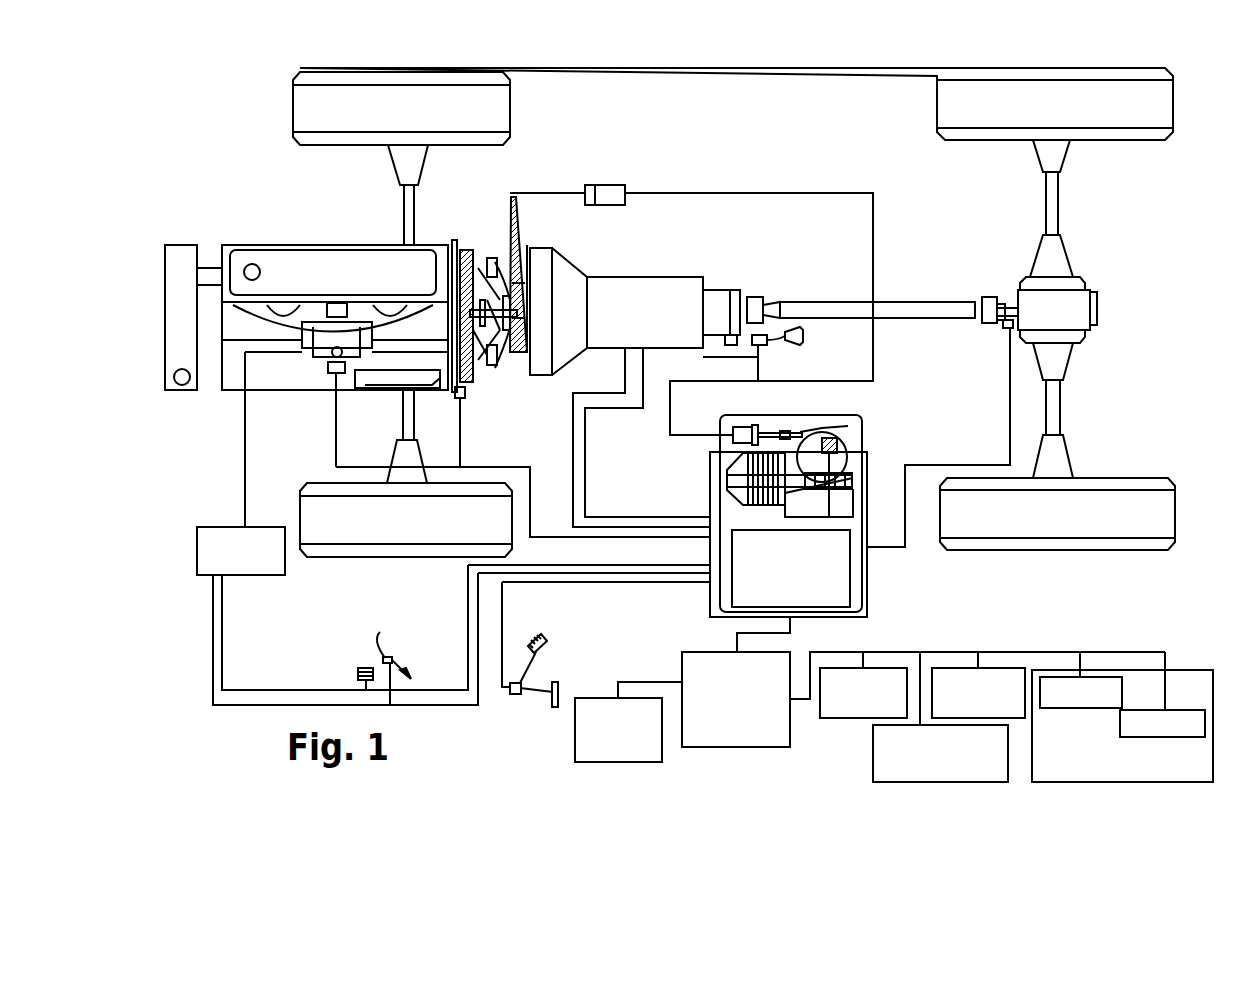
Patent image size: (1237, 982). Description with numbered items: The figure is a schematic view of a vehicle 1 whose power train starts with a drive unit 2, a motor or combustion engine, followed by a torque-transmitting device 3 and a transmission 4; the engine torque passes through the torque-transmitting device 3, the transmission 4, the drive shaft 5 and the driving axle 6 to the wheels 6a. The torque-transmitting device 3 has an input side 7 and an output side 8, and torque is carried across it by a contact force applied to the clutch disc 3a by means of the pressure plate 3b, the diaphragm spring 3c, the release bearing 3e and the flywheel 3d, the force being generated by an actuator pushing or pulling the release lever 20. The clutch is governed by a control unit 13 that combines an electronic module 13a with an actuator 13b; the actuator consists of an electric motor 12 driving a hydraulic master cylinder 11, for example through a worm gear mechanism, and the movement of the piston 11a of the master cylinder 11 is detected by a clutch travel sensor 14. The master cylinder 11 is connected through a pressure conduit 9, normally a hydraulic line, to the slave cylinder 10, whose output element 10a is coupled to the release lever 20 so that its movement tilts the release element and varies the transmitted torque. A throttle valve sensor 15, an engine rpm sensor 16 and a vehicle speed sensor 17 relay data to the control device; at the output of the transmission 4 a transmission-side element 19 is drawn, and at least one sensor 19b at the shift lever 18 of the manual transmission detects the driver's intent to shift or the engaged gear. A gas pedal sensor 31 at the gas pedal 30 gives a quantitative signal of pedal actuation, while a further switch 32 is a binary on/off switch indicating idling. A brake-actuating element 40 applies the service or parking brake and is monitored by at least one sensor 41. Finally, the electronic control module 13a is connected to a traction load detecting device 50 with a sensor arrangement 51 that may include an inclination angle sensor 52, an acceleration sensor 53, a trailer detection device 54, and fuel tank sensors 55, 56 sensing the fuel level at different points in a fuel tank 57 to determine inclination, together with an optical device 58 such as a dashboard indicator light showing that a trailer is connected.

The vehicle 1 is at (700, 155).
The drive unit 2 is at (278, 252).
The torque-transmitting device 3 is at (472, 245).
The clutch disc 3a is at (496, 368).
The pressure plate 3b is at (490, 258).
The diaphragm spring 3c is at (526, 283).
The flywheel 3d is at (472, 382).
The release bearing 3e is at (526, 318).
The transmission 4 is at (628, 292).
The drive shaft 5 is at (946, 300).
The driving axle 6 is at (1060, 406).
The wheels 6a is at (1005, 120).
The input side 7 is at (440, 250).
The output side 8 is at (526, 245).
The pressure conduit 9 is at (760, 193).
The slave cylinder 10 is at (608, 185).
The output element of the slave cylinder 10a is at (584, 190).
The hydraulic master cylinder 11 is at (742, 428).
The piston of the master cylinder 11a is at (758, 430).
The electric motor 12 is at (710, 498).
The control unit 13 is at (712, 605).
The electronic control module 13a is at (857, 572).
The actuator 13b is at (850, 420).
The clutch travel sensor 14 is at (840, 447).
The throttle valve sensor 15 is at (328, 376).
The engine rpm sensor 16 is at (457, 398).
The vehicle speed sensor 17 is at (1005, 333).
The shift lever 18 is at (790, 336).
The transmission output 19 is at (727, 295).
The sensor 19b is at (762, 347).
The release lever 20 is at (513, 197).
The gas pedal 30 is at (380, 634).
The gas pedal sensor 31 is at (358, 673).
The on/off switch 32 is at (392, 658).
The brake-actuating element 40 is at (220, 527).
The sensor 41 is at (515, 694).
The traction load detecting device 50 is at (762, 747).
The sensor arrangement 51 is at (1018, 661).
The inclination angle sensor 52 is at (826, 718).
The acceleration sensor 53 is at (873, 768).
The trailer detection device 54 is at (952, 666).
The fuel tank sensor 55 is at (1062, 708).
The fuel tank sensor 56 is at (1186, 710).
The fuel tank 57 is at (1180, 668).
The optical device 58 is at (575, 750).